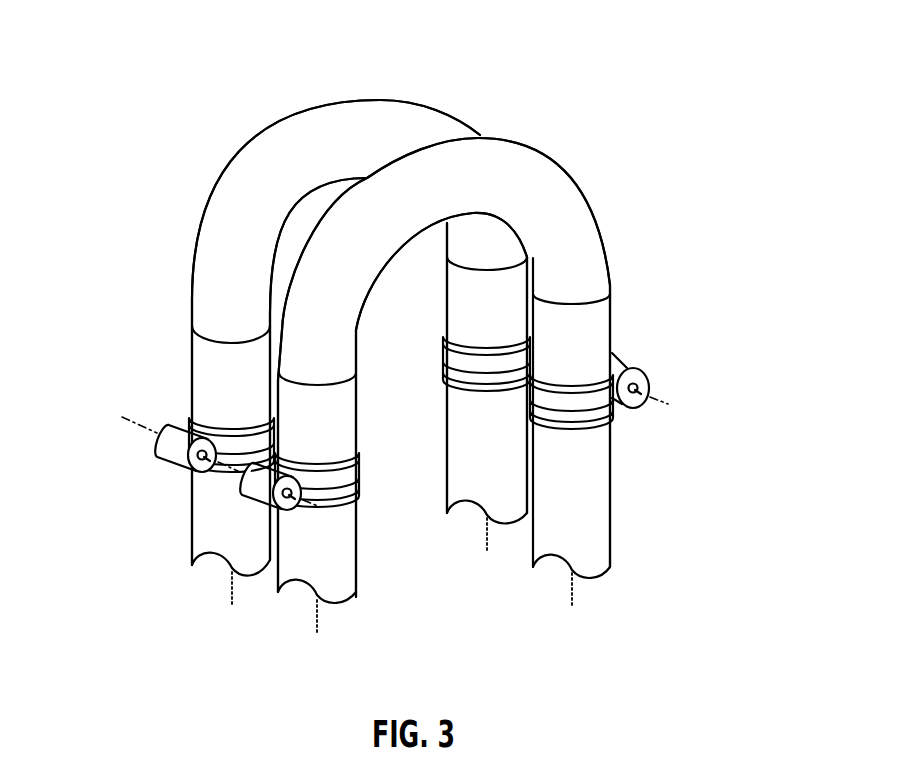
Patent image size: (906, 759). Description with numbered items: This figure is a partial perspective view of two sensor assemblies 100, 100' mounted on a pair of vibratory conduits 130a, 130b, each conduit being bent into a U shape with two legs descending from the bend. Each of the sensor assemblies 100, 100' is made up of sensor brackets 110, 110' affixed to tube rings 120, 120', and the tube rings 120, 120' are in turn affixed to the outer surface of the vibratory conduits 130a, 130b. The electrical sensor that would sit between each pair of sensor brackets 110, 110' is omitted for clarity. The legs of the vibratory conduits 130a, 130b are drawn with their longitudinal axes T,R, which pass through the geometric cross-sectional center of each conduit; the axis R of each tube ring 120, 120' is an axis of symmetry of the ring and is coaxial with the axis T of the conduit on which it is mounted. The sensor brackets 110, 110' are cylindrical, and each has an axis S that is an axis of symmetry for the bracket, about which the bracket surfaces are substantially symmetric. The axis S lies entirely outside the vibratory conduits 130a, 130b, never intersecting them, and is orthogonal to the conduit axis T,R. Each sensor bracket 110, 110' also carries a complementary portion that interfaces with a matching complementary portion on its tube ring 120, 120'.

The sensor assembly 100 is at (294, 332).
The sensor assembly 100' is at (520, 367).
The sensor bracket 110 is at (186, 488).
The sensor bracket 110' is at (661, 359).
The tube ring 120 is at (276, 434).
The tube ring 120' is at (529, 406).
The vibratory conduit 130a is at (583, 192).
The vibratory conduit 130b is at (382, 100).
The axis of symmetry of sensor bracket S is at (395, 463).
The longitudinal axis of vibratory conduit and axis of symmetry of tube ring T,R is at (402, 599).